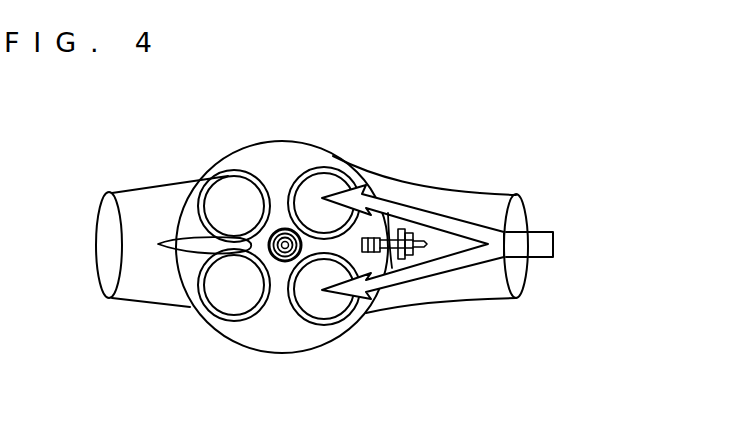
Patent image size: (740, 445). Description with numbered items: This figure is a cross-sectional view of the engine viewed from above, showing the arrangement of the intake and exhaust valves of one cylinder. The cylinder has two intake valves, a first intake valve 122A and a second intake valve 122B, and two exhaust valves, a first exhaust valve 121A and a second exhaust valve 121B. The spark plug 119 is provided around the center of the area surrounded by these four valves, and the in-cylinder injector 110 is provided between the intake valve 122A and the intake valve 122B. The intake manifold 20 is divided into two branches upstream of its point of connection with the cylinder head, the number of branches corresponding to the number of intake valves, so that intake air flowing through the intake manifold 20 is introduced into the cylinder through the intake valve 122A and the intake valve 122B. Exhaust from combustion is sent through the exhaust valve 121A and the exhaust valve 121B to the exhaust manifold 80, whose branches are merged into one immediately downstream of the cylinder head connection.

The intake manifold 20 is at (440, 193).
The exhaust manifold 80 is at (147, 200).
The in-cylinder injector 110 is at (392, 268).
The spark plug 119 is at (285, 261).
The first exhaust valve 121A is at (232, 193).
The second exhaust valve 121B is at (228, 292).
The first intake valve 122A is at (317, 180).
The second intake valve 122B is at (325, 310).